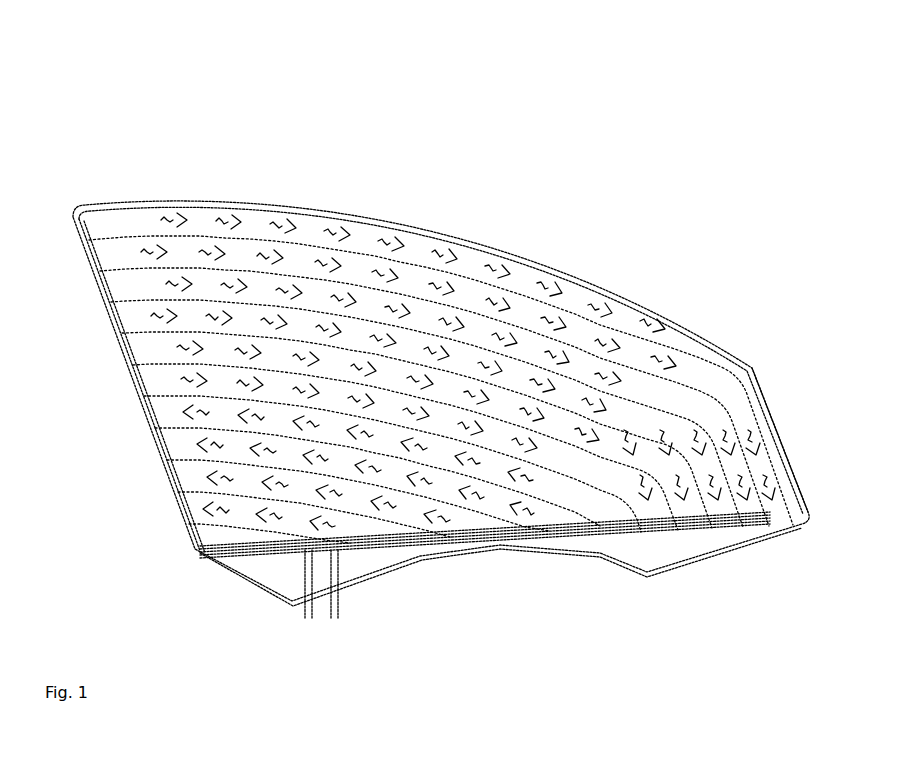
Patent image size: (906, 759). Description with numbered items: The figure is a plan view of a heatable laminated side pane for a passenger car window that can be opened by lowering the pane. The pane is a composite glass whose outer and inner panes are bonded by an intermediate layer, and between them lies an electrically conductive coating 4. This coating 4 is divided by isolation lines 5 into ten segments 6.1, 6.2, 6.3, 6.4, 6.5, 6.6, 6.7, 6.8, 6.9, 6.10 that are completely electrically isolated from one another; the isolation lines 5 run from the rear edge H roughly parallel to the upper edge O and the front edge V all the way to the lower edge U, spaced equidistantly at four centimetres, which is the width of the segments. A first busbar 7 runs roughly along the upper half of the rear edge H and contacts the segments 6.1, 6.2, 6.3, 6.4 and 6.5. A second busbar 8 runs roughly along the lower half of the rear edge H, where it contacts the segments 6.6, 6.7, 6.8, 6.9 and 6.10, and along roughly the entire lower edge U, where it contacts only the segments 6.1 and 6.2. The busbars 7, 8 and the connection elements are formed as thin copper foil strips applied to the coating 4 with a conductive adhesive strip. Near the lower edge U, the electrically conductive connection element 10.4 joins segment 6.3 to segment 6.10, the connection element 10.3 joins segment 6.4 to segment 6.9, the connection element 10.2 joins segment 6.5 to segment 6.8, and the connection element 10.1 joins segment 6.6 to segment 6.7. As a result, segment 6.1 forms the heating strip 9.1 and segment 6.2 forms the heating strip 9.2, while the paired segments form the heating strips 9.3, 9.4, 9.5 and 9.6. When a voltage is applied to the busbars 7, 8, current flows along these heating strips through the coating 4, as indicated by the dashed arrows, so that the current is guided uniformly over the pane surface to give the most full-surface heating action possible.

The electrically conductive coating 4 is at (128, 211).
The isolation lines 5 is at (143, 242).
The segment 6.1 is at (110, 228).
The segment 6.2 is at (117, 259).
The segment 6.3 is at (121, 291).
The segment 6.4 is at (130, 318).
The segment 6.5 is at (153, 352).
The segment 6.6 is at (160, 382).
The segment 6.7 is at (170, 413).
The segment 6.8 is at (178, 440).
The segment 6.9 is at (188, 477).
The segment 6.10 is at (200, 510).
The first busbar 7 is at (123, 335).
The second busbar 8 is at (153, 422).
The heating strip 9.1 is at (166, 258).
The heating strip 9.2 is at (219, 252).
The heating strip 9.3 is at (345, 518).
The heating strip 9.4 is at (420, 493).
The heating strip 9.5 is at (510, 502).
The heating strip 9.6 is at (563, 490).
The electrically conductive connection element 10.1 is at (580, 518).
The electrically conductive connection element 10.2 is at (605, 518).
The electrically conductive connection element 10.3 is at (653, 522).
The electrically conductive connection element 10.4 is at (670, 522).
The upper edge O is at (435, 176).
The lower edge U is at (496, 598).
The rear edge H is at (80, 509).
The front edge V is at (797, 376).